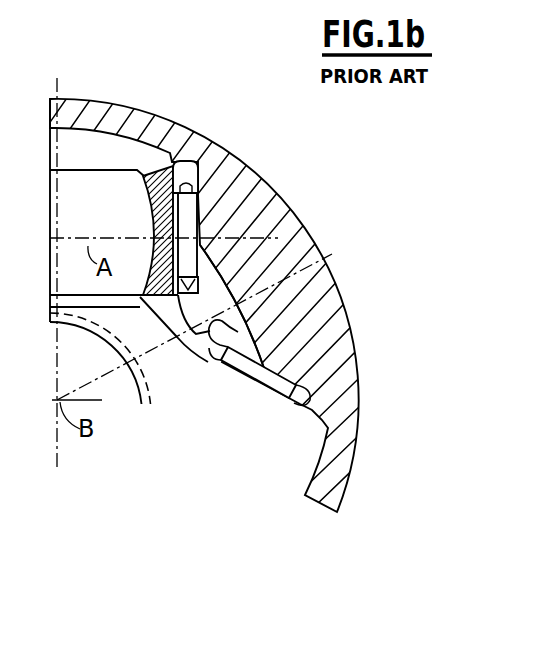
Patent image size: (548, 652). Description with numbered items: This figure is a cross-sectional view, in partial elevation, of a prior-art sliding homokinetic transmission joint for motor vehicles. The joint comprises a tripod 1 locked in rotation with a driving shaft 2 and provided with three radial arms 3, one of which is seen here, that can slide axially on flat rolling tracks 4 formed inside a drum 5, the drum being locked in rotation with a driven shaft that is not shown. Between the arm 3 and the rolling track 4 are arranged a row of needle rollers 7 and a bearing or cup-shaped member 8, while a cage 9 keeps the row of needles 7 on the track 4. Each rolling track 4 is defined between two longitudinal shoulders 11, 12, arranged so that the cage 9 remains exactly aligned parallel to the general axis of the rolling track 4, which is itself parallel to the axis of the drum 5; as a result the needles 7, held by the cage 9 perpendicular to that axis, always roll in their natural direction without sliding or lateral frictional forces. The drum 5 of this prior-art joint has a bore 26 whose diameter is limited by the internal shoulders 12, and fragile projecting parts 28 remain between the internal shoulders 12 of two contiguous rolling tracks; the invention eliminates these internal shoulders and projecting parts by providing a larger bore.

The tripod 1 is at (168, 410).
The driving shaft 2 is at (147, 377).
The radial arms 3 is at (77, 182).
The flat rolling tracks 4 is at (200, 232).
The drum 5 is at (122, 105).
The needle rollers 7 is at (200, 216).
The bearings or cup-shaped members 8 is at (176, 185).
The cages 9 is at (192, 186).
The longitudinal shoulder 11 is at (151, 192).
The internal longitudinal shoulder 12 is at (212, 321).
The bore 26 is at (178, 345).
The fragile projecting parts 28 is at (174, 324).